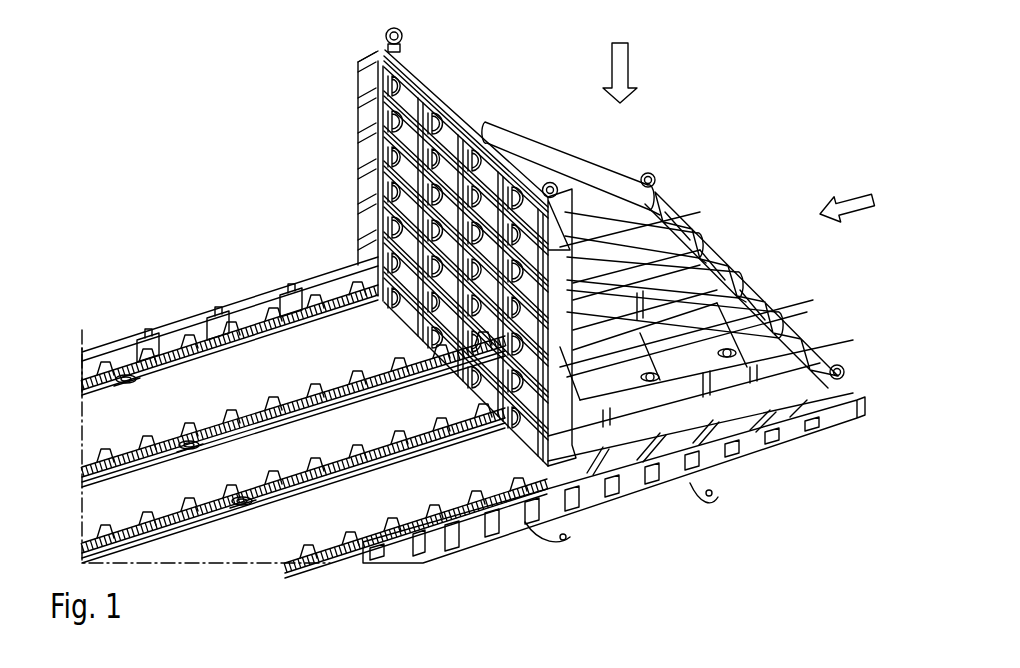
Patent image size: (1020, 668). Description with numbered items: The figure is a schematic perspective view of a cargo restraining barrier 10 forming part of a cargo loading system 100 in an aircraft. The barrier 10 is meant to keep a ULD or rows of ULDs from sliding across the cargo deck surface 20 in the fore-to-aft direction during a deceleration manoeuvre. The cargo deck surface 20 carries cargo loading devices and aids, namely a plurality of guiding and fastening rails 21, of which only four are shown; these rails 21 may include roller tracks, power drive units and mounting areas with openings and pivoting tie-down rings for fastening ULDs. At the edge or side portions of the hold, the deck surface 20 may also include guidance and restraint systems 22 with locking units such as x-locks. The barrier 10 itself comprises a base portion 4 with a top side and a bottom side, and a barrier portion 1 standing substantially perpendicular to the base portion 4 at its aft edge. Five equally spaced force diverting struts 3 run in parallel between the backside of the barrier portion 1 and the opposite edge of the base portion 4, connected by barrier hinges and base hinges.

The cargo loading system 100 is at (175, 126).
The cargo restraining barrier 10 is at (513, 86).
The barrier portion 1 is at (416, 78).
The force diverting struts 3 is at (655, 196).
The base portion 4 is at (693, 390).
The cargo deck surface 20 is at (175, 296).
The guiding and fastening rails 21 is at (292, 402).
The guidance and restraint systems 22 is at (300, 287).